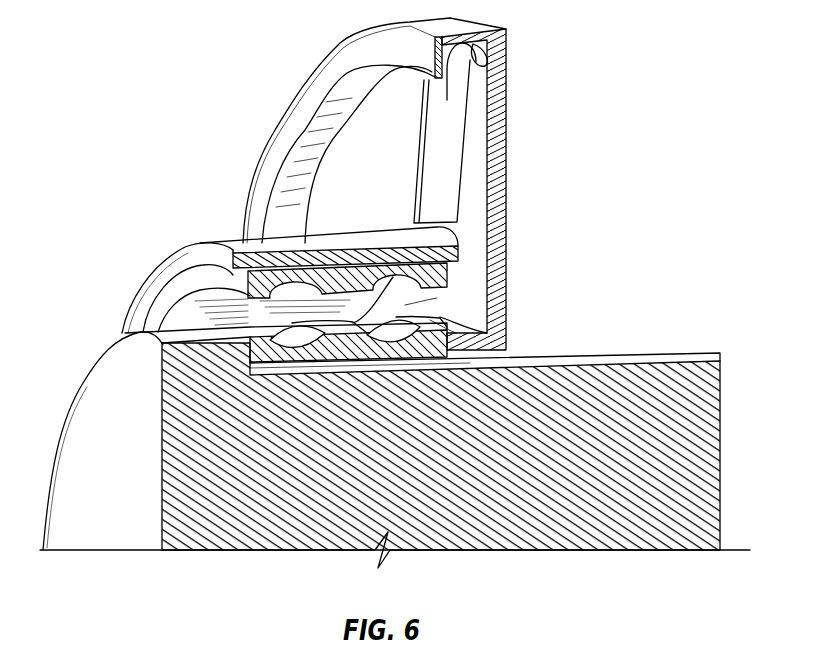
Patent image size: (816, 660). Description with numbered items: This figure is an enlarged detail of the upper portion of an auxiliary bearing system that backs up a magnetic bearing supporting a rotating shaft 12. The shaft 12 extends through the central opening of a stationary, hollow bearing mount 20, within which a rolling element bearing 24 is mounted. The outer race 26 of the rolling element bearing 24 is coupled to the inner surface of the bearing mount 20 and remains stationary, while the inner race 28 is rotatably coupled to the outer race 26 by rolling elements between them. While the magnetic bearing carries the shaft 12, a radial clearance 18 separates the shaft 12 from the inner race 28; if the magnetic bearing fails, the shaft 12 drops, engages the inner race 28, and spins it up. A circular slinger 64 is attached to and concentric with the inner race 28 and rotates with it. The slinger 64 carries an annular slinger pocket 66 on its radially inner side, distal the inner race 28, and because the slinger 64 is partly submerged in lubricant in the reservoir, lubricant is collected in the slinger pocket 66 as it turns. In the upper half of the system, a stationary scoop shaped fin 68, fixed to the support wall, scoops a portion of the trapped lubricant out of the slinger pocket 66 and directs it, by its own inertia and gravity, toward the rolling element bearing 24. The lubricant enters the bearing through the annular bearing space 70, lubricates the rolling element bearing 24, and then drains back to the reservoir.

The shaft 12 is at (708, 448).
The radial clearance 18 is at (352, 368).
The bearing mount 20 is at (150, 287).
The rolling element bearing 24 is at (449, 309).
The outer race 26 is at (452, 272).
The inner race 28 is at (456, 333).
The slinger 64 is at (497, 160).
The slinger pocket 66 is at (488, 64).
The scoop shaped fin 68 is at (433, 137).
The annular bearing space 70 is at (437, 298).